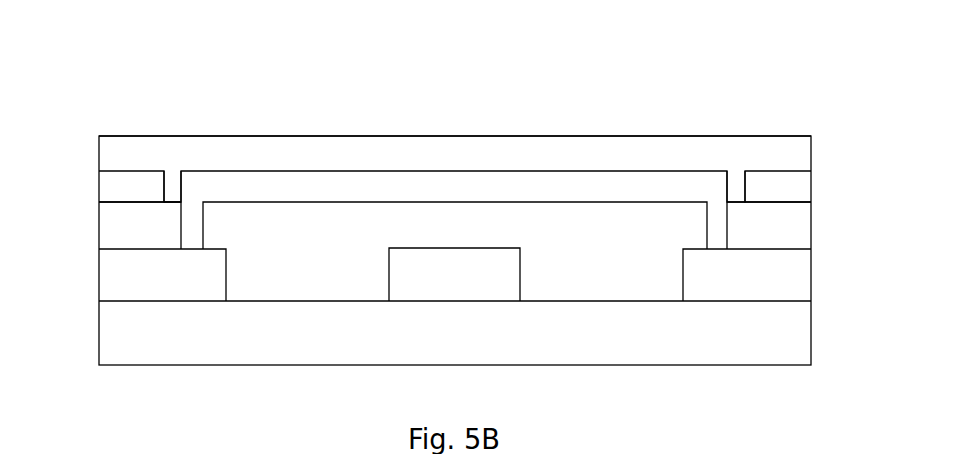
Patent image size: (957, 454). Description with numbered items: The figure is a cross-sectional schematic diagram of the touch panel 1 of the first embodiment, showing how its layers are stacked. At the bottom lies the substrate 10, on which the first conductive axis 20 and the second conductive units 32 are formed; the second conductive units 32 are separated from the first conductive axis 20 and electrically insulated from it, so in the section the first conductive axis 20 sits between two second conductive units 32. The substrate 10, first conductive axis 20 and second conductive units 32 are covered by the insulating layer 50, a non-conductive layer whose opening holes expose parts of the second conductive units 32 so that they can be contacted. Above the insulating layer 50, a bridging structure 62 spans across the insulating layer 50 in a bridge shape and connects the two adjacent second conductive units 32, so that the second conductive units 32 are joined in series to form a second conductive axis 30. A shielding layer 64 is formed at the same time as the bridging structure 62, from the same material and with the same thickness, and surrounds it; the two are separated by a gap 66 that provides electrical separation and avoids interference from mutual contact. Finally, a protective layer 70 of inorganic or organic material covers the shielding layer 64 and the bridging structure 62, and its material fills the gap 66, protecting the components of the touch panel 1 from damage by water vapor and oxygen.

The touch panel 1 is at (804, 57).
The substrate 10 is at (464, 347).
The first conductive axis 20 is at (464, 287).
The second conductive axis 30 is at (455, 274).
The second conductive unit 32 is at (168, 286).
The insulating layer 50 is at (463, 235).
The bridging structure 62 is at (462, 197).
The shielding layer 64 is at (140, 196).
The gap 66 is at (172, 178).
The protective layer 70 is at (465, 161).